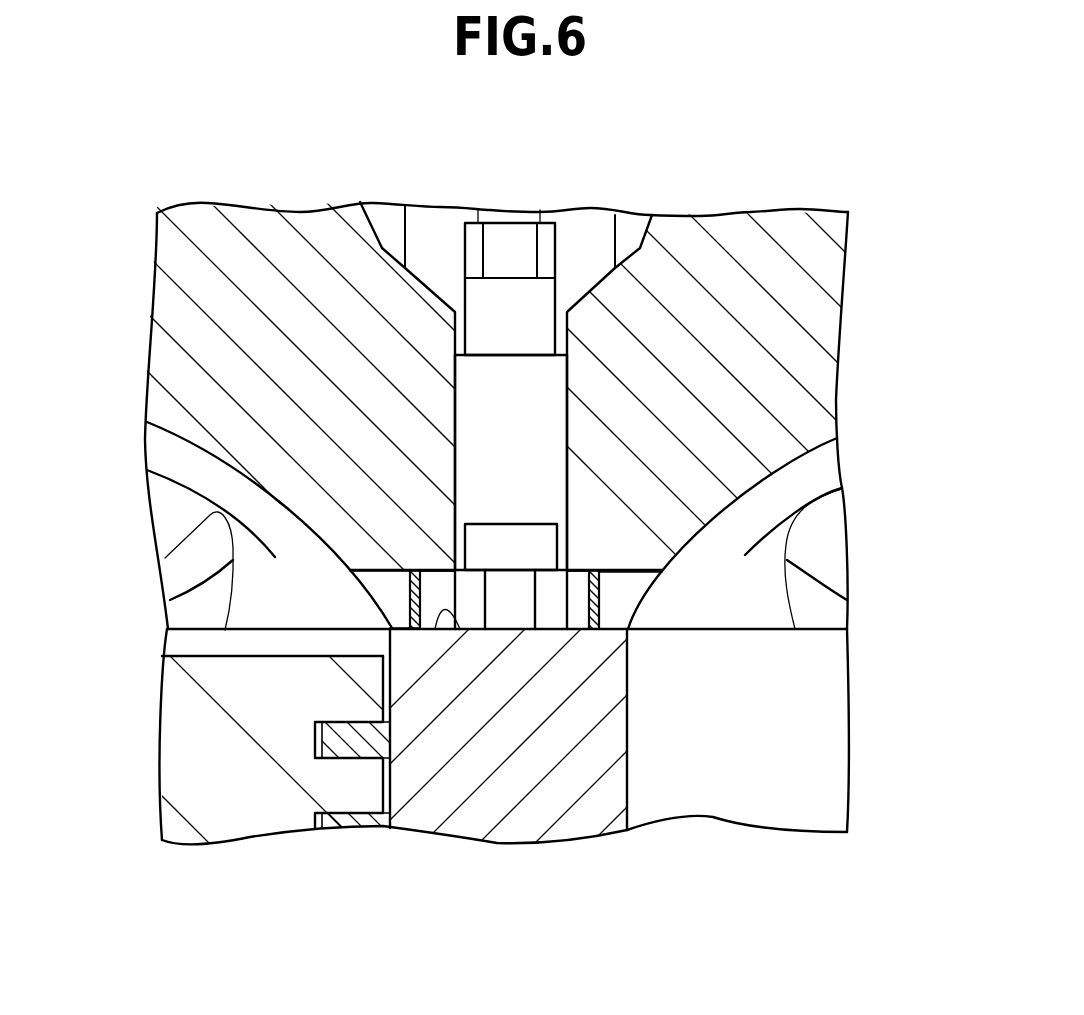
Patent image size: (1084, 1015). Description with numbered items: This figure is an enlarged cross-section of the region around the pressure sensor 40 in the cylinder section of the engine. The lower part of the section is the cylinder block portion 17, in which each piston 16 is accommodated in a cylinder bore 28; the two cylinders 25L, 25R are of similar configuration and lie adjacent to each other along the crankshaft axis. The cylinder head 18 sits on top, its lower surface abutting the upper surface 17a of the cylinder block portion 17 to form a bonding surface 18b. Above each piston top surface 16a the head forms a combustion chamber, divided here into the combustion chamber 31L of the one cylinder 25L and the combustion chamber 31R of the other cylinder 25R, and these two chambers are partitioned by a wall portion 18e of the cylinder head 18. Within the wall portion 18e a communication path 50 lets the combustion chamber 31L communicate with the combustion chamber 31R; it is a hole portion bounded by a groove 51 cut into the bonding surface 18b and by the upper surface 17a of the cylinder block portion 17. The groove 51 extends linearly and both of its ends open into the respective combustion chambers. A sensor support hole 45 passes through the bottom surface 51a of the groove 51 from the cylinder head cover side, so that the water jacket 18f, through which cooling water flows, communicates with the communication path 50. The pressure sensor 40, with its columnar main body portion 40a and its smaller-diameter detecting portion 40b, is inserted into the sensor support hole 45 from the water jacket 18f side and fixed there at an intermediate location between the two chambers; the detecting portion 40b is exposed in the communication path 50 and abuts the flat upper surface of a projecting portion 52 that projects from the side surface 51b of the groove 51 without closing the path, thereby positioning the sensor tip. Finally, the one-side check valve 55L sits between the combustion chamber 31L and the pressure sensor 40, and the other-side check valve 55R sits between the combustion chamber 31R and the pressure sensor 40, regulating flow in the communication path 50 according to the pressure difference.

The piston 16 is at (195, 804).
The top surface 16a is at (192, 655).
The cylinder block portion 17 is at (467, 817).
The upper surface 17a is at (460, 640).
The cylinder head 18 is at (850, 288).
The bonding surface 18b is at (549, 572).
The wall portion 18e is at (633, 412).
The water jacket 18f is at (429, 220).
The cylinder 25L is at (160, 744).
The cylinder 25R is at (830, 745).
The cylinder bore 28 is at (343, 826).
The combustion chamber 31L is at (162, 509).
The combustion chamber 31R is at (836, 500).
The pressure sensor 40 is at (565, 246).
The main body portion 40a is at (490, 433).
The detecting portion 40b is at (517, 553).
The sensor support hole 45 is at (566, 441).
The communication path 50 is at (636, 618).
The groove 51 is at (407, 632).
The bottom surface 51a is at (573, 574).
The side surface 51b is at (396, 631).
The projecting portion 52 is at (495, 615).
The one-side check valve 55L is at (407, 590).
The other-side check valve 55R is at (602, 588).